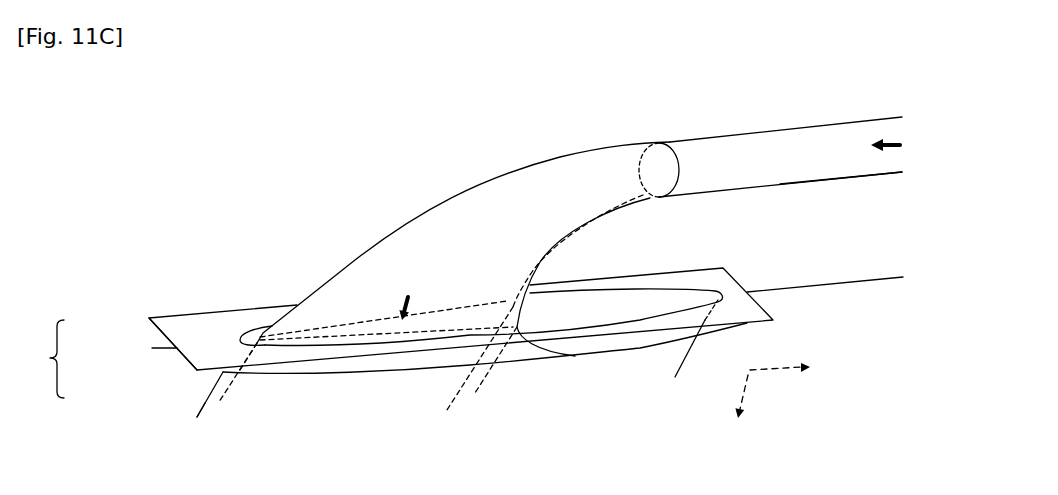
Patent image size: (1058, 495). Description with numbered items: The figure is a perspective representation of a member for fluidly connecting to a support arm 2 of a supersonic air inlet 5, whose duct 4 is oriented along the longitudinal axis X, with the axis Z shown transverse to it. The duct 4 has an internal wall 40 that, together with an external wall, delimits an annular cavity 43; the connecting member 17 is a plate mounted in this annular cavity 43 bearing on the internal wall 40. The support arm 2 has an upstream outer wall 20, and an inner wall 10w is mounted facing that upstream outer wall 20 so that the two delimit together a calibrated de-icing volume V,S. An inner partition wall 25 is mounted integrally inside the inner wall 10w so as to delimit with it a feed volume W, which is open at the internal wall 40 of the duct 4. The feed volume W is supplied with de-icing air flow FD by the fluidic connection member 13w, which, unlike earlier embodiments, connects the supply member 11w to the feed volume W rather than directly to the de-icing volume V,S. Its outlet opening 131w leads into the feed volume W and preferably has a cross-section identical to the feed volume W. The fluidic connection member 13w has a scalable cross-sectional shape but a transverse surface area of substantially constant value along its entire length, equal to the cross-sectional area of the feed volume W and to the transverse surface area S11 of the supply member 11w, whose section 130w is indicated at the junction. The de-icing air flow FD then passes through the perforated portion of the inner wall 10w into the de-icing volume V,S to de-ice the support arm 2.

The connecting member 17 is at (225, 305).
The internal wall 40 is at (903, 278).
The fluidic connection member 13w is at (444, 184).
The supply member 11w is at (788, 130).
The tube cross-section 130w is at (653, 143).
The transverse surface area S11 is at (656, 170).
The annular cavity 43 is at (854, 250).
The outlet opening 131w is at (577, 357).
The feed volume W is at (374, 416).
The inner partition wall 25 is at (476, 396).
The inner wall 10w is at (220, 408).
The de-icing volume V,S is at (235, 385).
The support arm 2 is at (190, 395).
The upstream outer wall 20 is at (198, 420).
The duct 4 is at (133, 330).
The supersonic air inlet 5 is at (46, 359).
The de-icing air flow FD is at (663, 229).
The longitudinal axis X is at (790, 371).
The axis Z is at (739, 414).